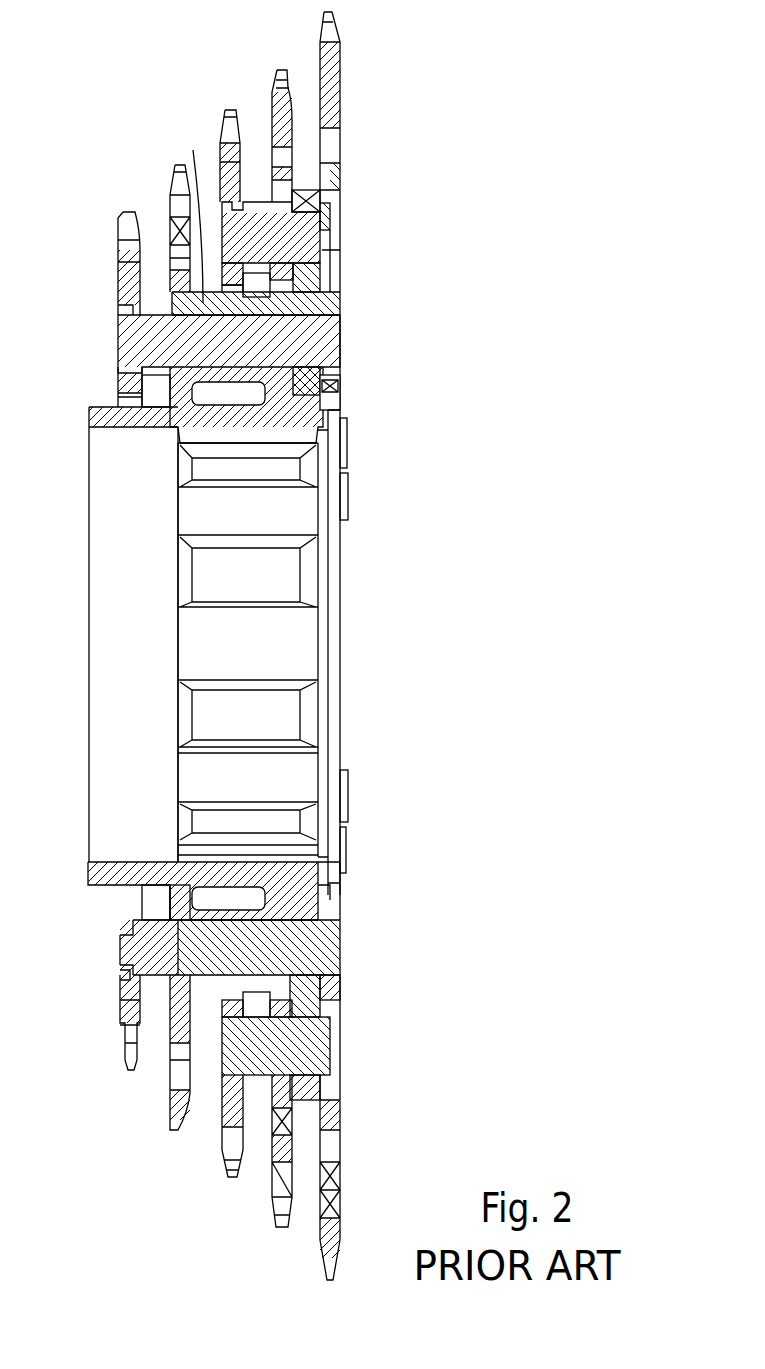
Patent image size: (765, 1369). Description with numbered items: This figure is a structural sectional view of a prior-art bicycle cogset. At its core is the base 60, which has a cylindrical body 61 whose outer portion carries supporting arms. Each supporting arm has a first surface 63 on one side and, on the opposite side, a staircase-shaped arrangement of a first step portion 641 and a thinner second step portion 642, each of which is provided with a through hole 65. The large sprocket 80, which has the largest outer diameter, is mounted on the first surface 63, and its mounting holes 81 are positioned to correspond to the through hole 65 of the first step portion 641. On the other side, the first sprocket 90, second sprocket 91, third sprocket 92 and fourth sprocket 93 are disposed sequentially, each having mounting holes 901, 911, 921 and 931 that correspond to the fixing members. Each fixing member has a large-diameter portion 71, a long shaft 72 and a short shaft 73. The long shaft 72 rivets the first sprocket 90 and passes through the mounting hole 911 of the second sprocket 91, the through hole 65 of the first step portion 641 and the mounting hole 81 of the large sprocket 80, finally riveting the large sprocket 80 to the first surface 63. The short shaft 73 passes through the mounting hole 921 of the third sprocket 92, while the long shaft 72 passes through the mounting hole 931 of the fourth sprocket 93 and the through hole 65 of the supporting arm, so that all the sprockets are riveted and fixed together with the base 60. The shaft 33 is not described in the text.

The shaft 33 is at (327, 383).
The base 60 is at (318, 437).
The cylindrical body 61 is at (100, 415).
The first surface 63 is at (310, 212).
The first step portion 641 is at (172, 240).
The second step portion 642 is at (308, 200).
The through hole 65 is at (322, 230).
The large-diameter portion 71 is at (258, 195).
The long shaft 72 is at (320, 278).
The short shaft 73 is at (230, 225).
The large sprocket 80 is at (334, 97).
The mounting hole 81 is at (338, 323).
The first sprocket 90 is at (122, 1012).
The mounting hole 901 is at (122, 977).
The second sprocket 91 is at (223, 1062).
The mounting hole 911 is at (185, 1030).
The third sprocket 92 is at (190, 1100).
The mounting hole 921 is at (227, 1018).
The fourth sprocket 93 is at (290, 1185).
The mounting hole 931 is at (292, 1125).